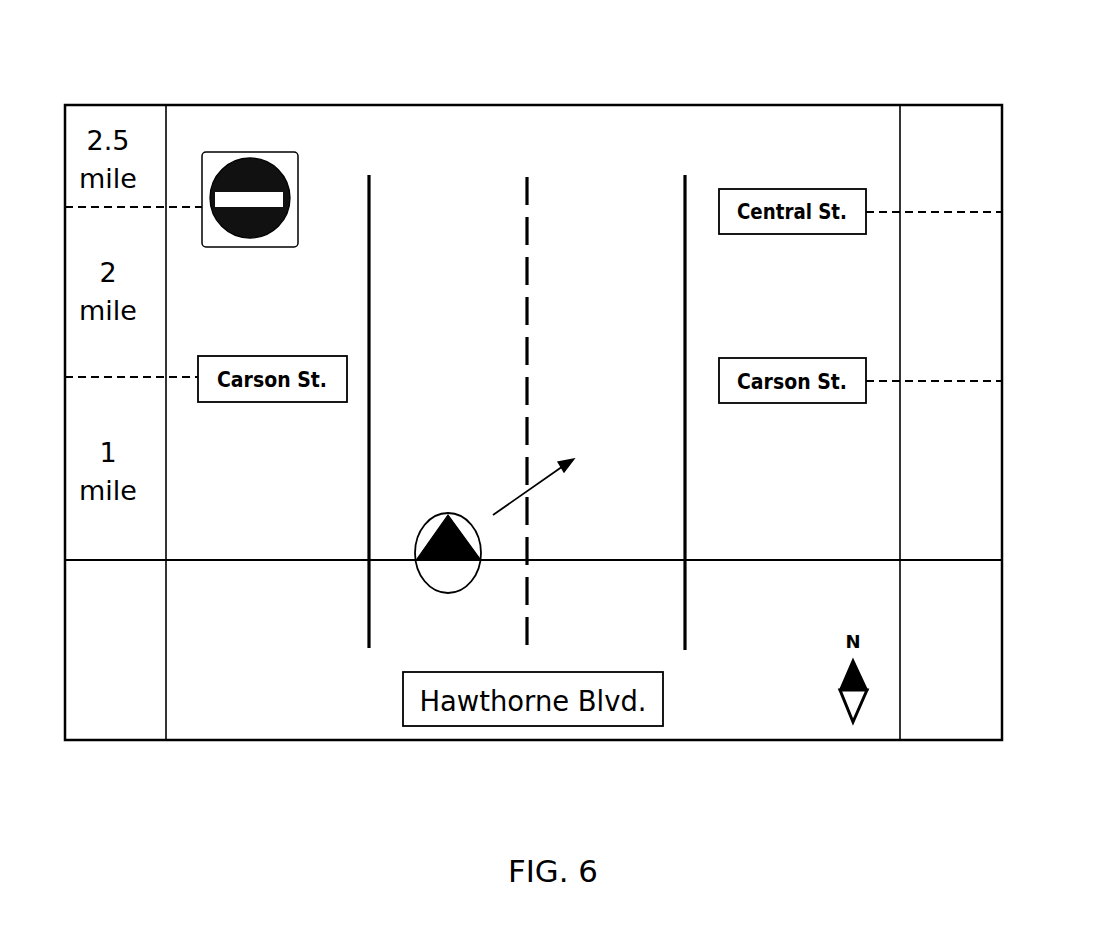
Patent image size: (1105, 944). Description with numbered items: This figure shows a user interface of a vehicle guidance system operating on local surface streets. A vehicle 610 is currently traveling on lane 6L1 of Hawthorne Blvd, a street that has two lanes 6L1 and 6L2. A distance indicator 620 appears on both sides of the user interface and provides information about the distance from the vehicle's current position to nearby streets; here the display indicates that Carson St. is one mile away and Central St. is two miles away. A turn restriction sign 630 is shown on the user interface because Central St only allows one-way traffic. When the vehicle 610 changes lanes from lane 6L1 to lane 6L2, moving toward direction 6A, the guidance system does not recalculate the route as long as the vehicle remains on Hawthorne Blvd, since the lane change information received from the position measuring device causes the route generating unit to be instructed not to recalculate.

The turn restriction sign 630 is at (233, 152).
The lane 6L1 is at (448, 163).
The lane 6L2 is at (584, 175).
The distance indicator 620 is at (967, 359).
The vehicle 610 is at (425, 568).
The direction 6A is at (553, 471).